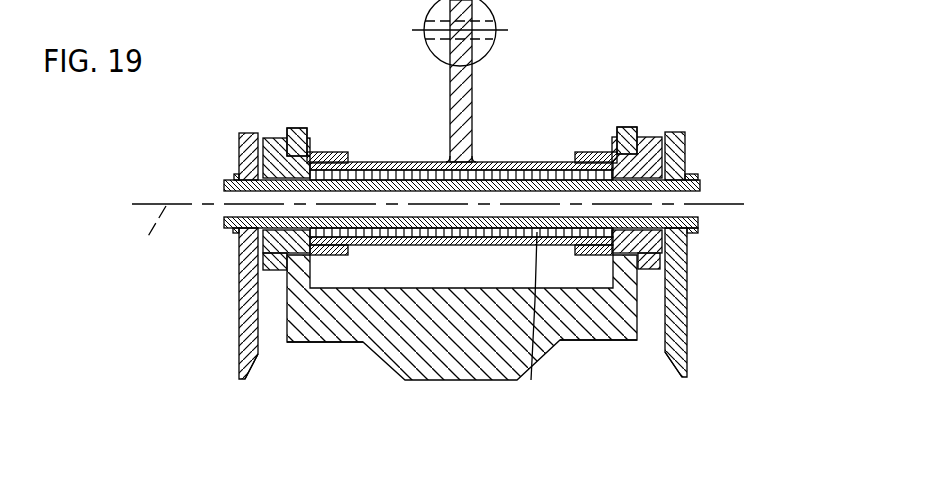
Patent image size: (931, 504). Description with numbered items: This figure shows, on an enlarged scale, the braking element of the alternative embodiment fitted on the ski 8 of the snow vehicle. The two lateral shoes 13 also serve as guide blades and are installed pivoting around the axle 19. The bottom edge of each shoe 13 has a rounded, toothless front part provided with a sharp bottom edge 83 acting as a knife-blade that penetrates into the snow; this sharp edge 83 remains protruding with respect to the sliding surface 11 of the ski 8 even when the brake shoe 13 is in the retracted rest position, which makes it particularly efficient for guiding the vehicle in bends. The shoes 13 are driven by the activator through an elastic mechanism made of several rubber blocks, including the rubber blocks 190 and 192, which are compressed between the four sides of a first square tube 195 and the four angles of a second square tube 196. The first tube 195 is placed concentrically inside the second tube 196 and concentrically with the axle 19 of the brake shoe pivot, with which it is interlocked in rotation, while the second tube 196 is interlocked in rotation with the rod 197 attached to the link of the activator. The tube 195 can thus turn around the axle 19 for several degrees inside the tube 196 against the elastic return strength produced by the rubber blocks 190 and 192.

The rubber block 190 is at (403, 177).
The rod 197 is at (460, 100).
The second square tube 196 is at (547, 163).
The first square tube 195 is at (700, 186).
The axle 19 is at (144, 241).
The lateral shoe 13 is at (252, 333).
The sharp bottom edge 83 is at (246, 384).
The sliding surface 11 is at (332, 347).
The ski 8 is at (470, 355).
The rubber block 192 is at (531, 380).